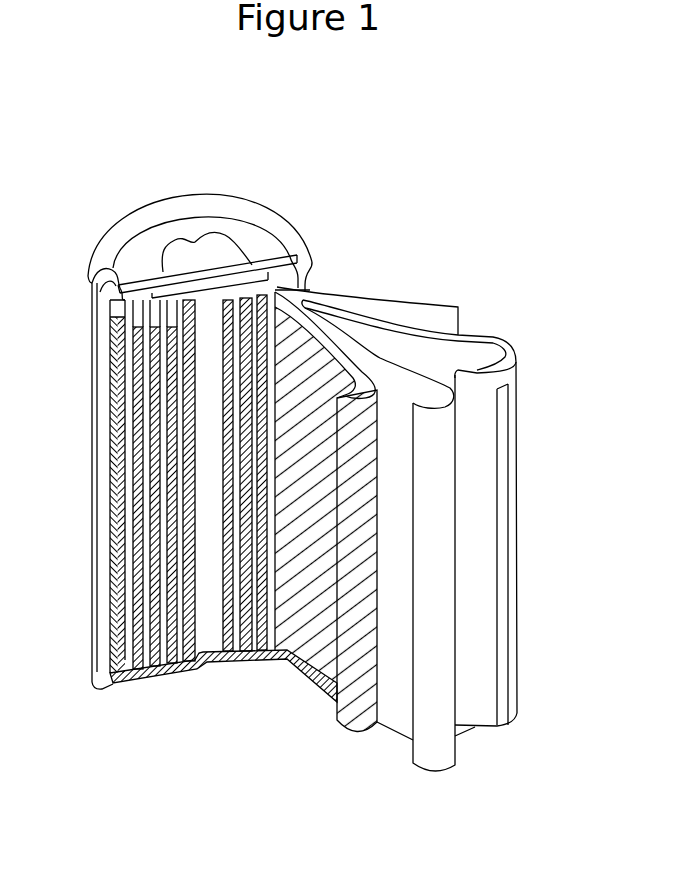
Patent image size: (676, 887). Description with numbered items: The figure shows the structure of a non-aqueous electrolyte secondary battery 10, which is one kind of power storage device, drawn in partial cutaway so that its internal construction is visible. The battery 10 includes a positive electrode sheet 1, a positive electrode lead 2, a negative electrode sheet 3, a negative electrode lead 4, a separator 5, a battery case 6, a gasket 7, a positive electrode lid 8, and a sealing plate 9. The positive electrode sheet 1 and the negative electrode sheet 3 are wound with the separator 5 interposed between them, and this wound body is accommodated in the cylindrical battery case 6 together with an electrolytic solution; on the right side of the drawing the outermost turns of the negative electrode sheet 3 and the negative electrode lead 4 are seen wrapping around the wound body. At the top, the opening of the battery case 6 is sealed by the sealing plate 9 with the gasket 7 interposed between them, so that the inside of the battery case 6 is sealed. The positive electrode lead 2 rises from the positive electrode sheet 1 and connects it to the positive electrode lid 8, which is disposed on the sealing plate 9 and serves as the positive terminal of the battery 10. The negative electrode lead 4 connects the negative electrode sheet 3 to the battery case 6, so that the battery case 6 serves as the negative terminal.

The positive electrode sheet 1 is at (378, 642).
The positive electrode lead 2 is at (302, 275).
The negative electrode sheet 3 is at (517, 420).
The negative electrode lead 4 is at (503, 497).
The separator 5 is at (405, 368).
The battery case 6 is at (113, 502).
The gasket 7 is at (94, 274).
The positive electrode lid 8 is at (215, 222).
The sealing plate 9 is at (248, 230).
The non-aqueous electrolyte secondary battery 10 is at (338, 222).